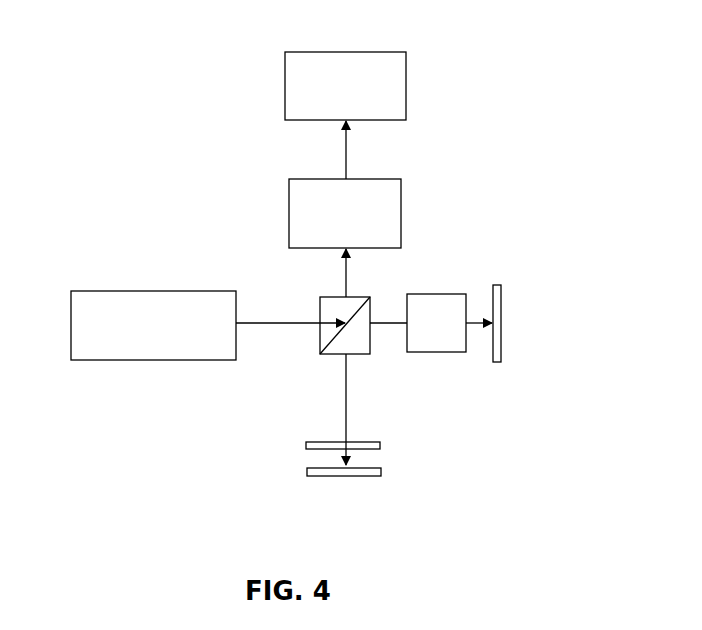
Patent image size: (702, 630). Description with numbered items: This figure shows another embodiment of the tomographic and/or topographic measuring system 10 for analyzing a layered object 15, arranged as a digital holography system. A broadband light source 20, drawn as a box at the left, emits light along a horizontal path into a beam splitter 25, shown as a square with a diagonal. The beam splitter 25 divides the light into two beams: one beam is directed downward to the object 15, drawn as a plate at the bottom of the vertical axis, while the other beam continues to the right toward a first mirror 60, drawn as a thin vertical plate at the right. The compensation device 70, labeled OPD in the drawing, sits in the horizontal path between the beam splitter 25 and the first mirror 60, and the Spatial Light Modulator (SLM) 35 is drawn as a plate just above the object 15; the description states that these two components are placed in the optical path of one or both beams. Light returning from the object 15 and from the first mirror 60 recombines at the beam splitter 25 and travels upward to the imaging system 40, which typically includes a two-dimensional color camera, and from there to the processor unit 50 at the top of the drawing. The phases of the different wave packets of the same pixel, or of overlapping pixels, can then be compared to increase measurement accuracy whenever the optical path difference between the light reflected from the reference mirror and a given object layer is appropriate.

The measuring system 10 is at (421, 548).
The layered object 15 is at (337, 476).
The broadband light source 20 is at (71, 340).
The beam splitter 25 is at (320, 336).
The Spatial Light Modulator (SLM) 35 is at (380, 443).
The imaging system 40 is at (401, 204).
The processor unit 50 is at (315, 52).
The first mirror 60 is at (501, 342).
The compensation device 70 is at (423, 352).